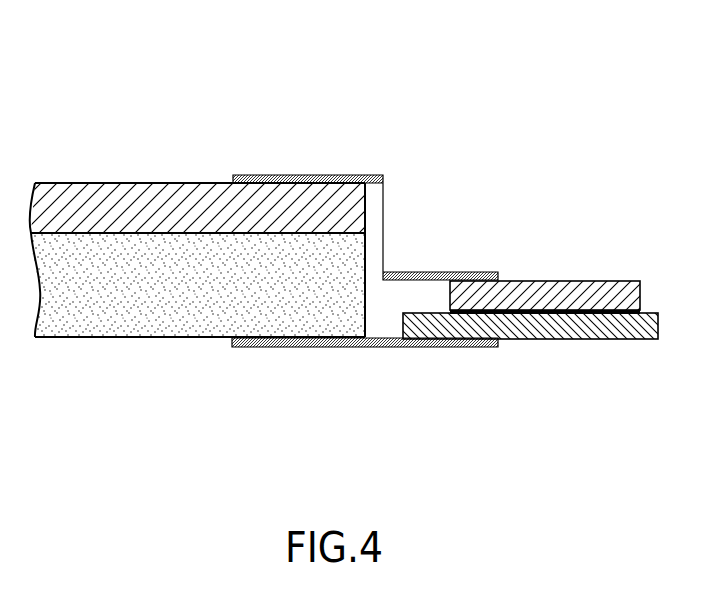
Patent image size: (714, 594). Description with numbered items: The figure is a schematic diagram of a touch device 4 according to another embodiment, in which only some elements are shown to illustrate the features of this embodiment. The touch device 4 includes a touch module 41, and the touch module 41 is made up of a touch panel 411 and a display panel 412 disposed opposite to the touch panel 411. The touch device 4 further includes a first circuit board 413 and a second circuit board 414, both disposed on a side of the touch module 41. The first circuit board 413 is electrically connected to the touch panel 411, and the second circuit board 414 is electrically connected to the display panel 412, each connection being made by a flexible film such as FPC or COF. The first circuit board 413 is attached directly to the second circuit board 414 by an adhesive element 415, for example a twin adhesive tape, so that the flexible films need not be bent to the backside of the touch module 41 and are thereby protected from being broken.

The touch device 4 is at (95, 82).
The touch module 41 is at (60, 183).
The touch panel 411 is at (150, 190).
The display panel 412 is at (78, 312).
The first circuit board 413 is at (540, 290).
The second circuit board 414 is at (580, 330).
The adhesive element 415 is at (644, 311).